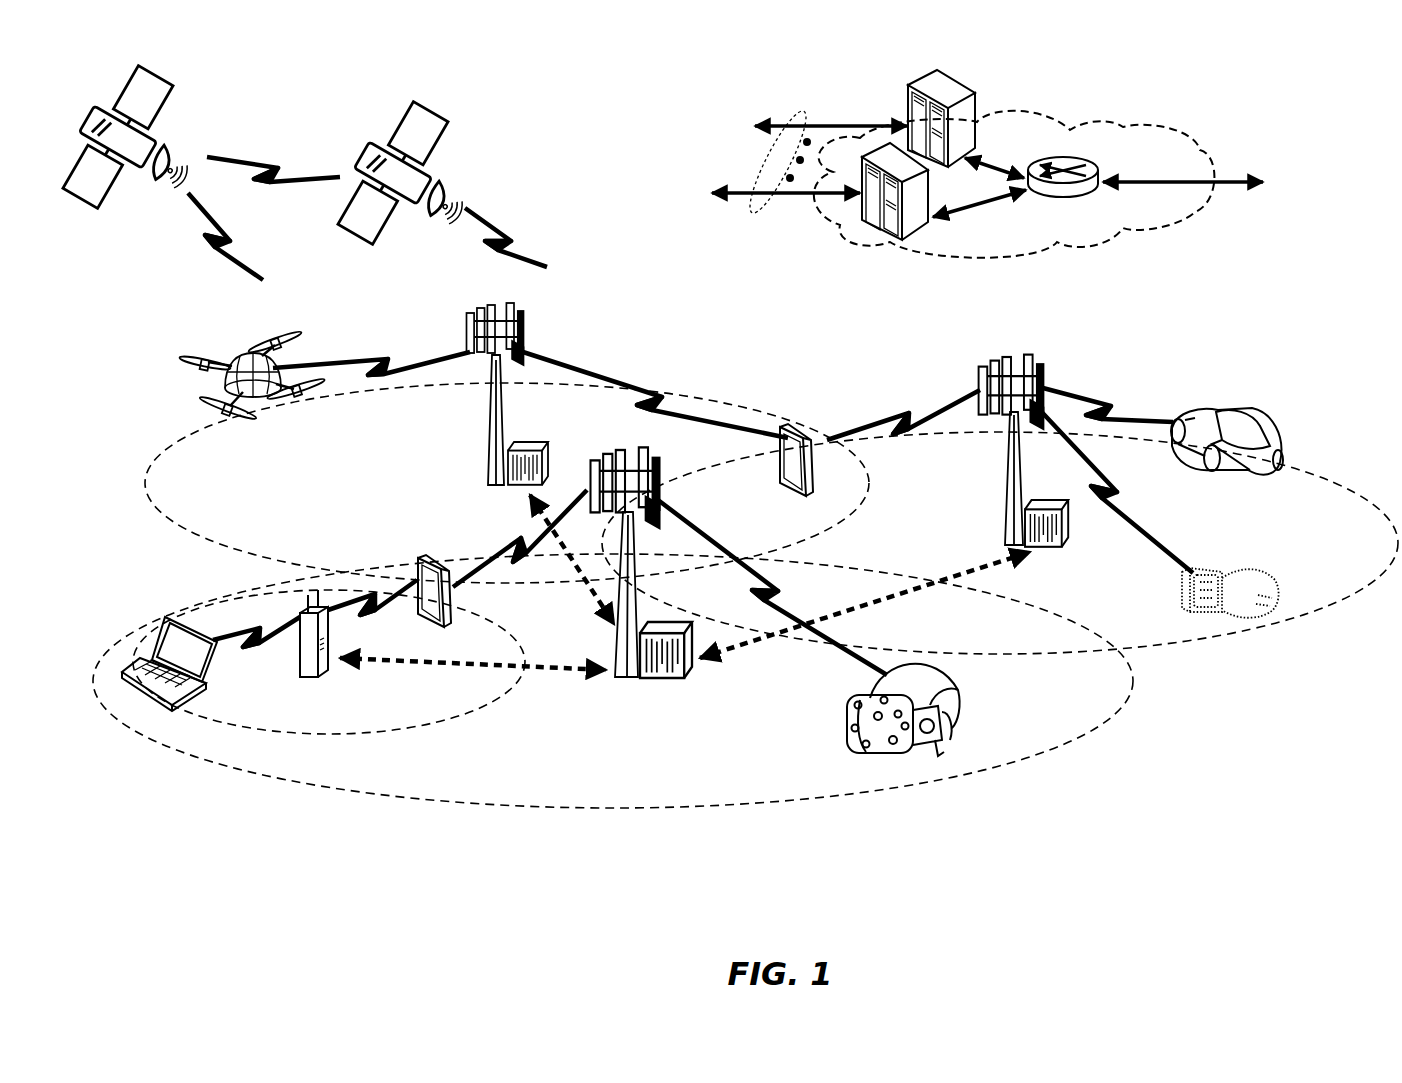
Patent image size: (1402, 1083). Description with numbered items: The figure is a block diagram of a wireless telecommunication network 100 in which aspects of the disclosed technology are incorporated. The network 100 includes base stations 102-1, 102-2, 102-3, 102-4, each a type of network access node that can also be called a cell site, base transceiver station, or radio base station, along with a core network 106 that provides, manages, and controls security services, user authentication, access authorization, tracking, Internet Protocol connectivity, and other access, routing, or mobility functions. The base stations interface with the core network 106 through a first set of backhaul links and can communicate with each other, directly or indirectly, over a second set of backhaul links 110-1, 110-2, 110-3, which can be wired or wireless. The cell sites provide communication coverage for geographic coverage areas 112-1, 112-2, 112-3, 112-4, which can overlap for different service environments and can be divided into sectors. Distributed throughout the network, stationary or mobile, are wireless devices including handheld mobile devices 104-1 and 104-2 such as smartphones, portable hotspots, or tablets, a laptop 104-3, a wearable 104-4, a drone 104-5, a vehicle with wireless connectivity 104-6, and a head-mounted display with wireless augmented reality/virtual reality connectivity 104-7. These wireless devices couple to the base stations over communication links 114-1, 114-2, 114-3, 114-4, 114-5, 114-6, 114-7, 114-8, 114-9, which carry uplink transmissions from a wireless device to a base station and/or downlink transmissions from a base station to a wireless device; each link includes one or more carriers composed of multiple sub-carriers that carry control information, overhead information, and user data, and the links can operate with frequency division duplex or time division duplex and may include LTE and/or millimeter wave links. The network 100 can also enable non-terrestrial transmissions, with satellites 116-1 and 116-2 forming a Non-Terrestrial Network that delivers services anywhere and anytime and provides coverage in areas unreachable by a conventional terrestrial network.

The wireless telecommunication network 100 is at (1332, 140).
The core network 106 is at (1095, 245).
The base station 102-1 is at (630, 680).
The base station 102-2 is at (488, 433).
The base station 102-3 is at (1005, 467).
The base station 102-4 is at (300, 668).
The handheld mobile device 104-1 is at (450, 607).
The handheld mobile device 104-2 is at (780, 470).
The laptop 104-3 is at (147, 707).
The wearable 104-4 is at (1207, 568).
The drone 104-5 is at (260, 400).
The vehicle with wireless connectivity 104-6 is at (1247, 423).
The head-mounted display 104-7 is at (958, 690).
The backhaul link 110-1 is at (367, 660).
The backhaul link 110-2 is at (927, 588).
The backhaul link 110-3 is at (590, 583).
The geographic coverage area 112-1 is at (560, 810).
The geographic coverage area 112-2 is at (433, 720).
The geographic coverage area 112-3 is at (208, 537).
The geographic coverage area 112-4 is at (1310, 467).
The communication link 114-1 is at (780, 590).
The communication link 114-2 is at (520, 528).
The communication link 114-3 is at (223, 640).
The communication link 114-4 is at (370, 603).
The communication link 114-5 is at (377, 353).
The communication link 114-6 is at (658, 388).
The communication link 114-7 is at (900, 408).
The communication link 114-8 is at (1130, 507).
The communication link 114-9 is at (1102, 402).
The satellite 116-1 is at (173, 147).
The satellite 116-2 is at (438, 188).